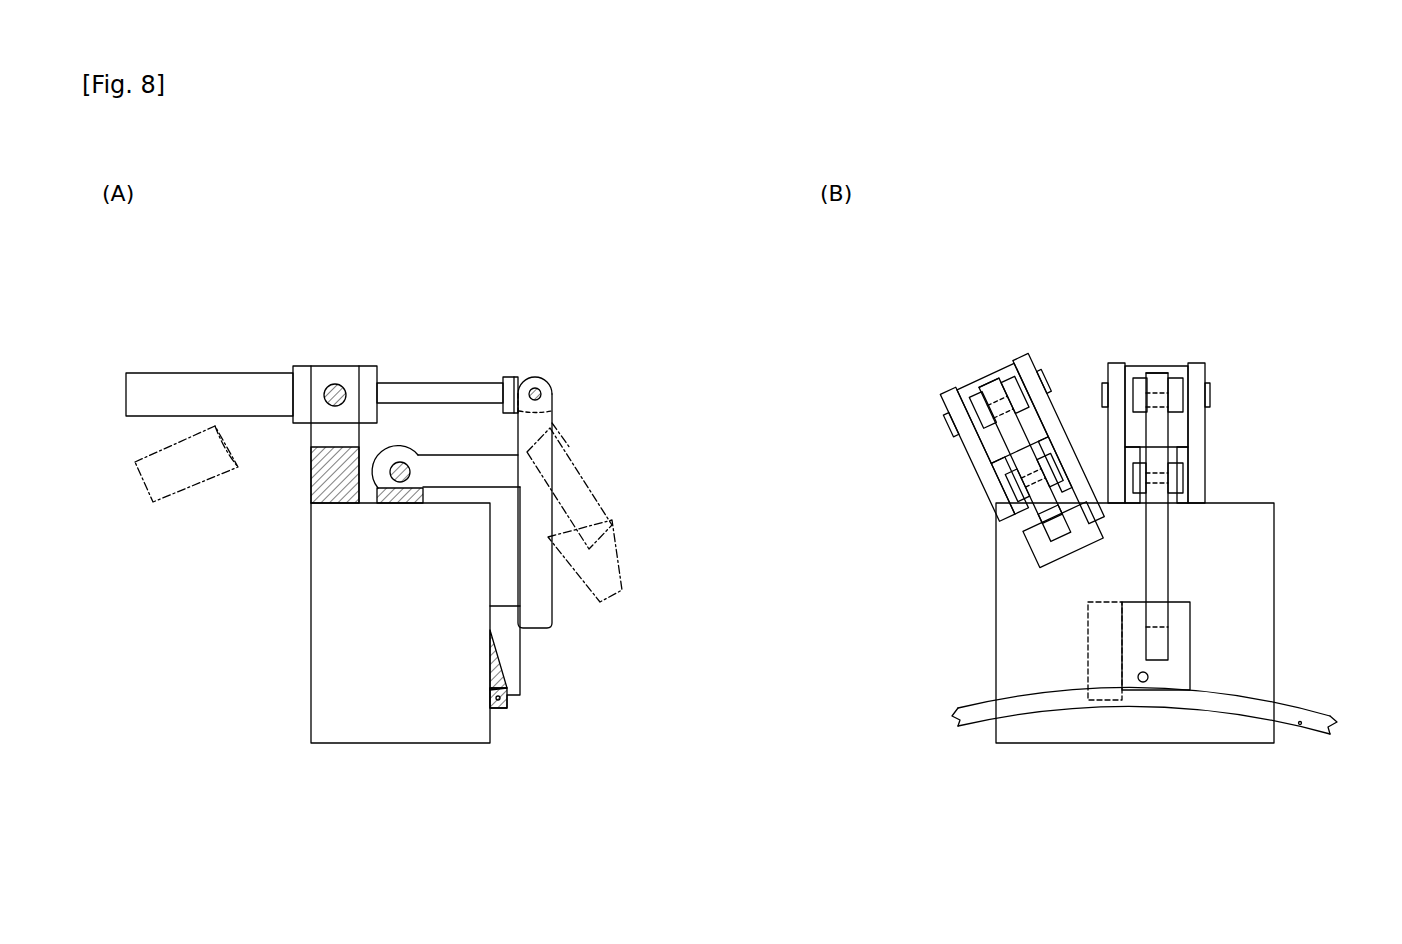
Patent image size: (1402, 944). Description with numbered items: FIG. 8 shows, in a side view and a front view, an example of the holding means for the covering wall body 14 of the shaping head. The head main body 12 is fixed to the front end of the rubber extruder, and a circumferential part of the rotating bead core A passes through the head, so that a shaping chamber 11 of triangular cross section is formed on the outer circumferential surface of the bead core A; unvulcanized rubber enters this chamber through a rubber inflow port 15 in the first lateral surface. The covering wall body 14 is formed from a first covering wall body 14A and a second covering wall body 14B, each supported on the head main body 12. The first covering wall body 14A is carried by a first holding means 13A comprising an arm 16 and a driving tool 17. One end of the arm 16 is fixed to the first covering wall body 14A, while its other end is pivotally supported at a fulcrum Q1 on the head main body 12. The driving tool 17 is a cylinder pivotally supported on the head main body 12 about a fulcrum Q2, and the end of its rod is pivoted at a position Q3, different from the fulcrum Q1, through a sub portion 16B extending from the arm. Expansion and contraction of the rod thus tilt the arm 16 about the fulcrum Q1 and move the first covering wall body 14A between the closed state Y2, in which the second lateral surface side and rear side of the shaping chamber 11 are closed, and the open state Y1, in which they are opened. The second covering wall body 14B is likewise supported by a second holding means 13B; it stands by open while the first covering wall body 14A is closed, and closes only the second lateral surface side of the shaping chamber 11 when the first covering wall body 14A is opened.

The shaping chamber 11 is at (495, 673).
The head main body 12 is at (312, 643).
The first holding means 13A is at (402, 368).
The second holding means 13B is at (1048, 363).
The covering wall body 14 is at (887, 567).
The first covering wall body 14A is at (507, 637).
The second covering wall body 14B is at (1020, 552).
The rubber inflow port 15 is at (1141, 710).
The arm 16 is at (552, 510).
The sub portion 16B is at (555, 413).
The driving tool 17 is at (187, 373).
The fulcrum Q1 is at (380, 497).
The fulcrum Q2 is at (331, 386).
The pivot position Q3 is at (552, 387).
The open state Y1 is at (615, 558).
The closed state Y2 is at (532, 697).
The bead core A is at (497, 708).